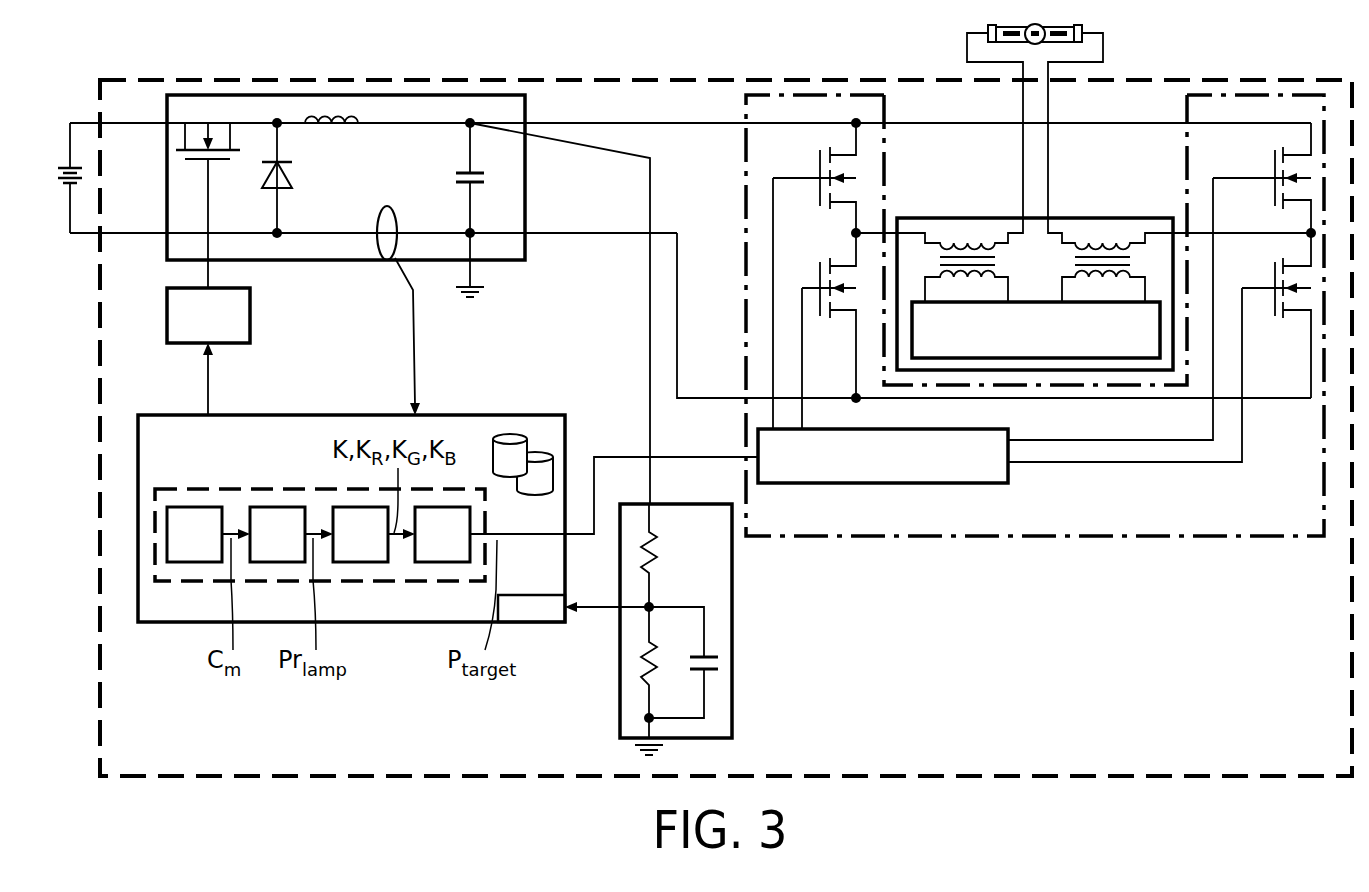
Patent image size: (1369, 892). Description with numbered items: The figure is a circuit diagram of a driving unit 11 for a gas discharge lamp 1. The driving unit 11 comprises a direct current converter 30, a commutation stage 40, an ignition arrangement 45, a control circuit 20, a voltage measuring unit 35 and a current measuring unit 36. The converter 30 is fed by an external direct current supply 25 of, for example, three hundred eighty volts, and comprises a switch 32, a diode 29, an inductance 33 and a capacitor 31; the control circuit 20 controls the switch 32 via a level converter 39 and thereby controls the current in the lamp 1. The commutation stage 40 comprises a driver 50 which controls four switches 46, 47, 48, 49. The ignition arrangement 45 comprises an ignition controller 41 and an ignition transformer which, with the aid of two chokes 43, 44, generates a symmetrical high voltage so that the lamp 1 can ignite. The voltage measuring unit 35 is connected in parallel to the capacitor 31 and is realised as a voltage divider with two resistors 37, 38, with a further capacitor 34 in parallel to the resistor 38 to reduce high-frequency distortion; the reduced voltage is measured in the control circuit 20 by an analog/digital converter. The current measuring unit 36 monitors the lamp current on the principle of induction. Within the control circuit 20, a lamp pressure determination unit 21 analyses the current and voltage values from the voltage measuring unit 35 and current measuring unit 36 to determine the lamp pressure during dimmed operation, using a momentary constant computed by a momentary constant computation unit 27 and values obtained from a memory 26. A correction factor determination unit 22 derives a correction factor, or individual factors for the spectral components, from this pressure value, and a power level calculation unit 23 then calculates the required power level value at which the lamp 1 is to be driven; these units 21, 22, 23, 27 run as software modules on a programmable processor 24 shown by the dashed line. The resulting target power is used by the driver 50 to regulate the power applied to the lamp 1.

The gas discharge lamp 1 is at (1082, 30).
The driving unit 11 is at (565, 80).
The control circuit 20 is at (177, 610).
The lamp pressure determination unit 21 is at (277, 534).
The correction factor determination unit 22 is at (360, 534).
The power level calculation unit 23 is at (442, 534).
The programmable processor 24 is at (209, 489).
The external direct current supply 25 is at (70, 150).
The memory 26 is at (508, 440).
The momentary constant computation unit 27 is at (194, 534).
The diode 29 is at (292, 184).
The direct current converter 30 is at (480, 95).
The capacitor 31 is at (456, 178).
The switch 32 is at (190, 138).
The inductance 33 is at (352, 124).
The capacitor 34 is at (719, 663).
The voltage measuring unit 35 is at (732, 705).
The current measuring unit 36 is at (374, 248).
The resistor 37 is at (651, 590).
The resistor 38 is at (641, 683).
The level converter 39 is at (208, 315).
The commutation stage 40 is at (1082, 537).
The ignition controller 41 is at (1036, 330).
The choke 43 is at (955, 236).
The choke 44 is at (1122, 241).
The ignition arrangement 45 is at (1092, 238).
The switch 46 is at (818, 278).
The switch 47 is at (819, 167).
The switch 48 is at (1273, 167).
The switch 49 is at (1273, 272).
The driver 50 is at (883, 456).